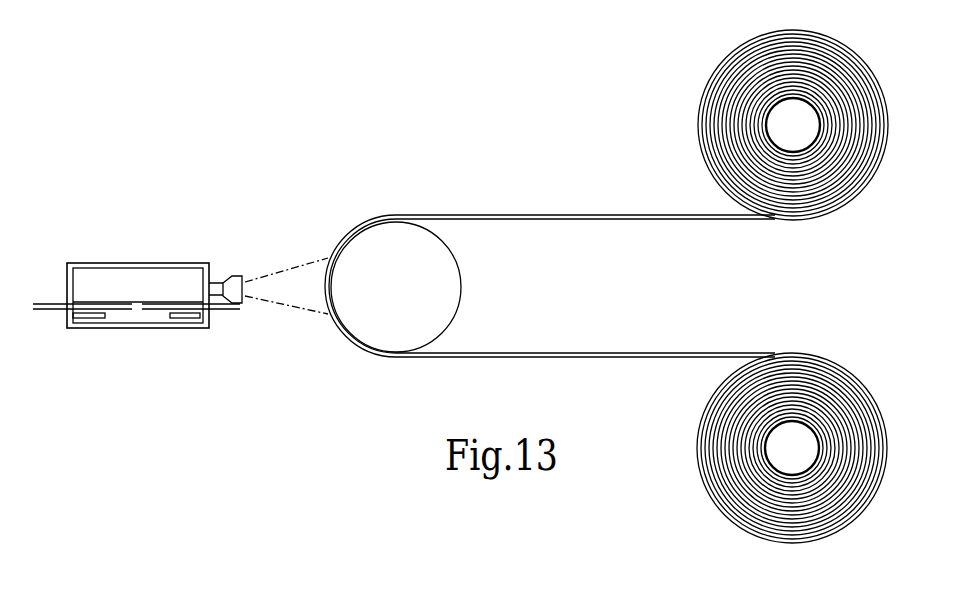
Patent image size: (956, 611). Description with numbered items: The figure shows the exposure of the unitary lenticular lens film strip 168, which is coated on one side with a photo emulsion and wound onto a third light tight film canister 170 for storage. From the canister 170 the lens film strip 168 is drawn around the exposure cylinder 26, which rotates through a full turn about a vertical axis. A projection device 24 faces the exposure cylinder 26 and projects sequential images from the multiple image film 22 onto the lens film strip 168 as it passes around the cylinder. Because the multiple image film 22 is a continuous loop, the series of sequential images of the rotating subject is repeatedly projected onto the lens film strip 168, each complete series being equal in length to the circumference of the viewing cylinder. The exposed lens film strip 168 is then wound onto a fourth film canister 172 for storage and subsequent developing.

The multiple image film 22 is at (95, 263).
The projection device 24 is at (150, 263).
The exposure cylinder 26 is at (458, 268).
The lenticular lens film strip 168 is at (563, 215).
The third light tight film canister 170 is at (717, 70).
The fourth film canister 172 is at (700, 475).